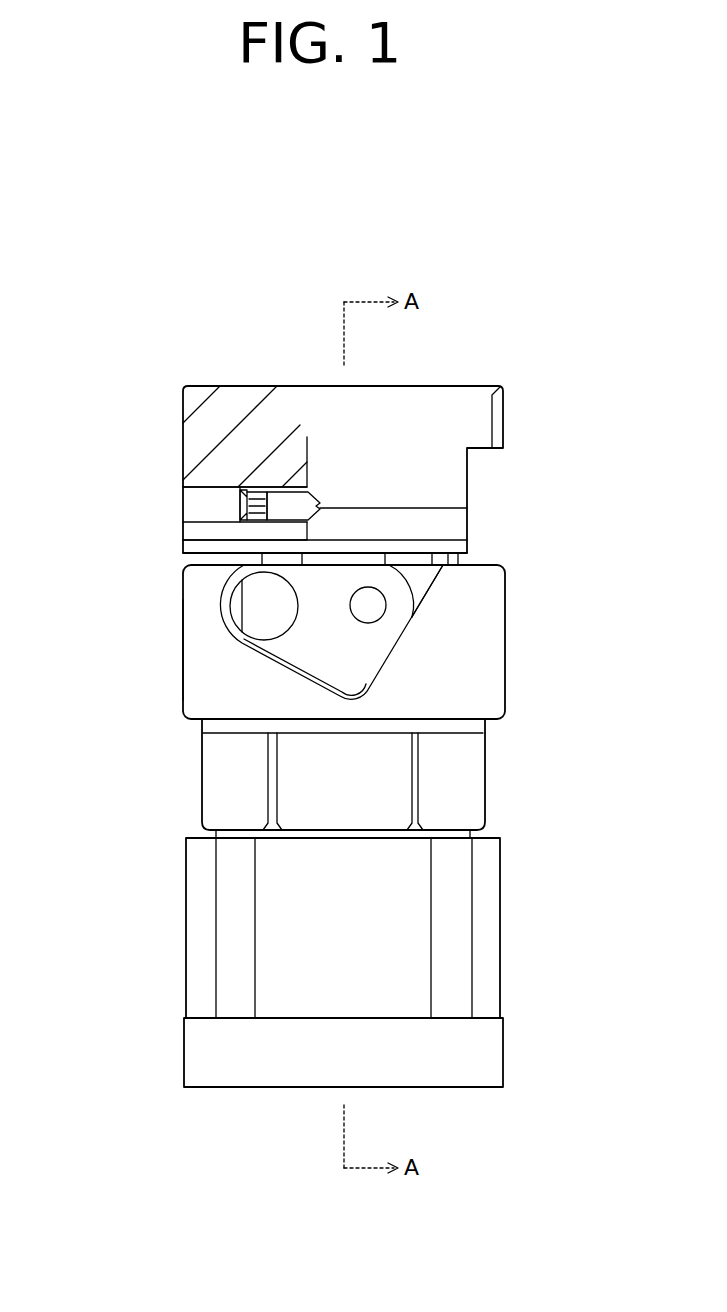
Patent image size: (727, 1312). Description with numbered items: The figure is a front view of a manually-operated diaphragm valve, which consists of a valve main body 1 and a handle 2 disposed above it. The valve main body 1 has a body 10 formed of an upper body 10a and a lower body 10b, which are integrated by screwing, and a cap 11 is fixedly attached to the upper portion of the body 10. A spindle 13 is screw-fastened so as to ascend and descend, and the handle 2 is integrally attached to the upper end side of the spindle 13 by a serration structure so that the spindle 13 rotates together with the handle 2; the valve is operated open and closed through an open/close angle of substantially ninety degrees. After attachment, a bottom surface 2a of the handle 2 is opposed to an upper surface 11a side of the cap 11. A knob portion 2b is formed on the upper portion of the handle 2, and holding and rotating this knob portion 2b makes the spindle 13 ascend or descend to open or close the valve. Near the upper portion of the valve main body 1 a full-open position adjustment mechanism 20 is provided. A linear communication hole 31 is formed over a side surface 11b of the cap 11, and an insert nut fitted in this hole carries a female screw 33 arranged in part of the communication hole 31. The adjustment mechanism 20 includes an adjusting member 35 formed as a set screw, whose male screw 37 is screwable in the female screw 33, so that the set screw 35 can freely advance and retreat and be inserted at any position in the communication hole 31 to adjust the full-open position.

The valve main body 1 is at (304, 802).
The handle 2 is at (238, 448).
The bottom surface 2a is at (215, 557).
The knob portion 2b is at (480, 410).
The body 10 is at (53, 810).
The upper body 10a is at (230, 773).
The lower body 10b is at (280, 892).
The cap 11 is at (440, 613).
The upper surface 11a is at (447, 560).
The side surface 11b is at (223, 667).
The spindle 13 is at (298, 505).
The full-open position adjustment mechanism 20 is at (217, 500).
The communication hole 31 is at (183, 498).
The female screw 33 is at (278, 495).
The adjusting member 35 is at (320, 492).
The male screw 37 is at (232, 547).